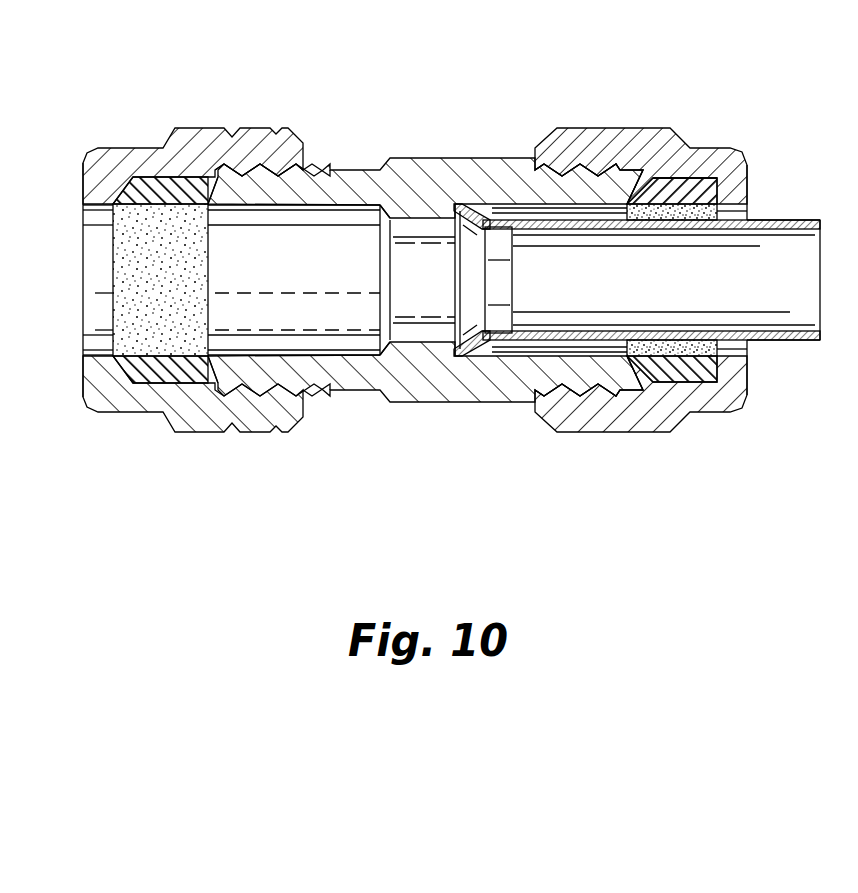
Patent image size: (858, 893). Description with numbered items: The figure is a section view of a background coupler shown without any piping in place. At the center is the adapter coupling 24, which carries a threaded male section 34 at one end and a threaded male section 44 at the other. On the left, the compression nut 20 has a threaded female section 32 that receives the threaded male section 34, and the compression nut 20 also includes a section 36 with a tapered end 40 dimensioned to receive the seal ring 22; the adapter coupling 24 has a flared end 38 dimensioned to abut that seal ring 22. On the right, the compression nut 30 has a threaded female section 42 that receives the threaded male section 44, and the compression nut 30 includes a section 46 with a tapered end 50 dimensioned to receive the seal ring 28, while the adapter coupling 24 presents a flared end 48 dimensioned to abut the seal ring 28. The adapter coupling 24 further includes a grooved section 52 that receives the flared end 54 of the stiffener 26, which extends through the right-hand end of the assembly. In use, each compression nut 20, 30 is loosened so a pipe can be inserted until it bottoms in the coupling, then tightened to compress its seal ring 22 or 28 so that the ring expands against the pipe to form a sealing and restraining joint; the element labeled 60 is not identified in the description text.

The compression nut 20 is at (180, 143).
The seal ring 22 is at (148, 195).
The adapter coupling 24 is at (397, 170).
The stiffener 26 is at (547, 297).
The seal ring 28 is at (687, 374).
The compression nut 30 is at (645, 140).
The threaded female section 32 is at (292, 162).
The threaded male section 34 is at (312, 172).
The section 36 is at (115, 194).
The flared end 38 is at (205, 197).
The tapered end 40 is at (83, 173).
The threaded female section 42 is at (562, 166).
The threaded male section 44 is at (578, 188).
The section 46 is at (718, 196).
The flared end 48 is at (615, 392).
The tapered end 50 is at (708, 180).
The grooved section 52 is at (477, 288).
The flared end 54 is at (462, 203).
The tube 60 is at (807, 221).